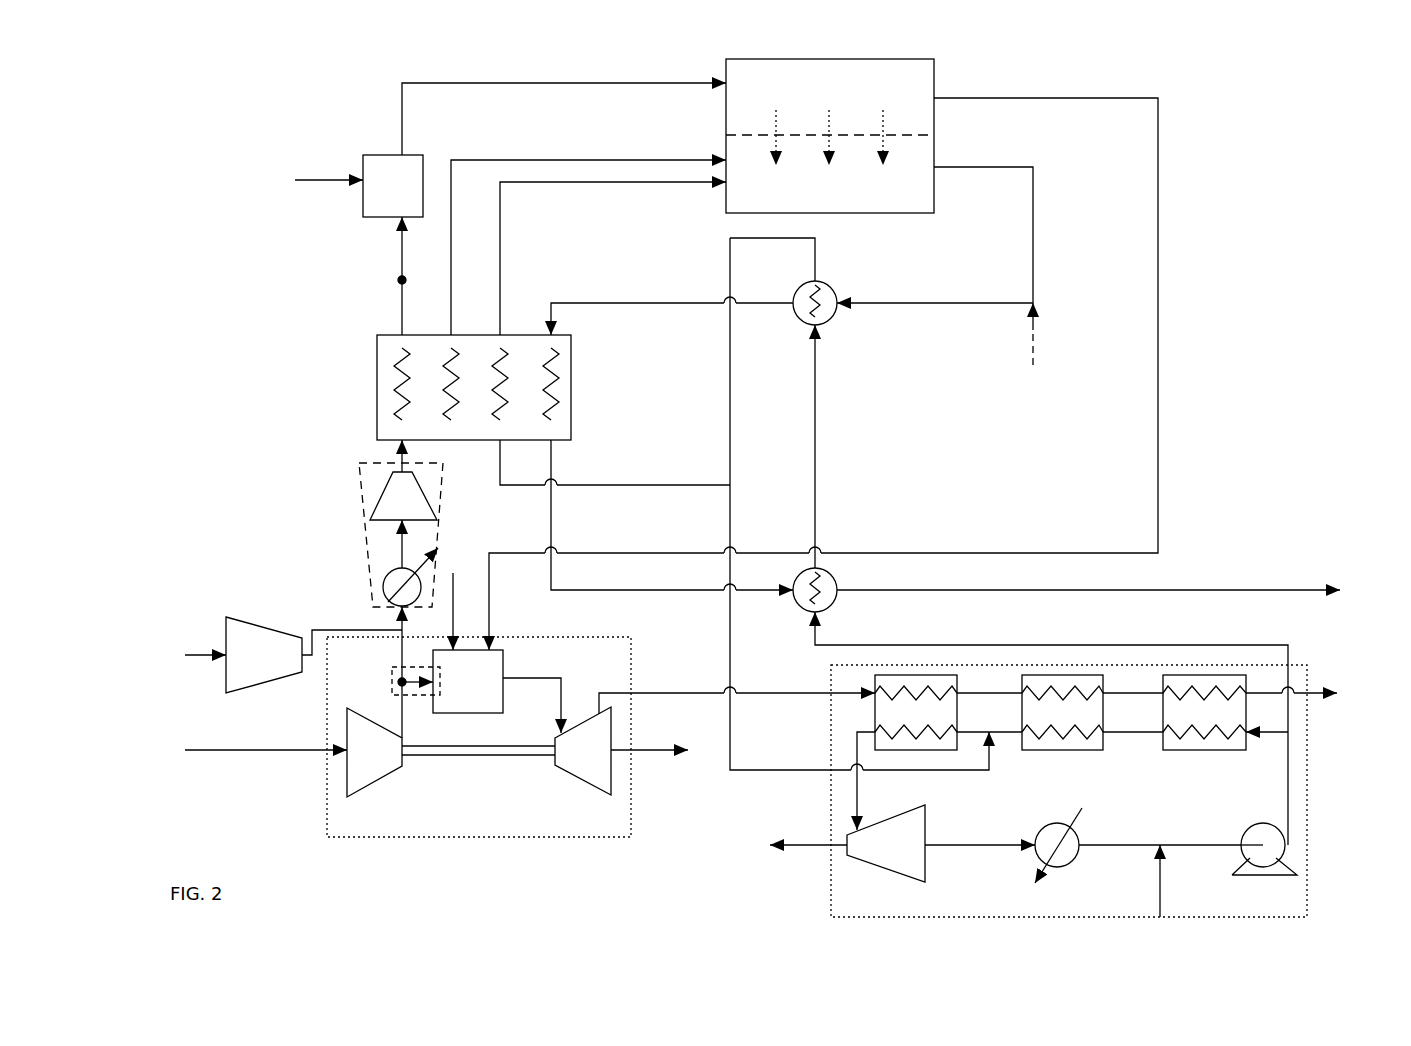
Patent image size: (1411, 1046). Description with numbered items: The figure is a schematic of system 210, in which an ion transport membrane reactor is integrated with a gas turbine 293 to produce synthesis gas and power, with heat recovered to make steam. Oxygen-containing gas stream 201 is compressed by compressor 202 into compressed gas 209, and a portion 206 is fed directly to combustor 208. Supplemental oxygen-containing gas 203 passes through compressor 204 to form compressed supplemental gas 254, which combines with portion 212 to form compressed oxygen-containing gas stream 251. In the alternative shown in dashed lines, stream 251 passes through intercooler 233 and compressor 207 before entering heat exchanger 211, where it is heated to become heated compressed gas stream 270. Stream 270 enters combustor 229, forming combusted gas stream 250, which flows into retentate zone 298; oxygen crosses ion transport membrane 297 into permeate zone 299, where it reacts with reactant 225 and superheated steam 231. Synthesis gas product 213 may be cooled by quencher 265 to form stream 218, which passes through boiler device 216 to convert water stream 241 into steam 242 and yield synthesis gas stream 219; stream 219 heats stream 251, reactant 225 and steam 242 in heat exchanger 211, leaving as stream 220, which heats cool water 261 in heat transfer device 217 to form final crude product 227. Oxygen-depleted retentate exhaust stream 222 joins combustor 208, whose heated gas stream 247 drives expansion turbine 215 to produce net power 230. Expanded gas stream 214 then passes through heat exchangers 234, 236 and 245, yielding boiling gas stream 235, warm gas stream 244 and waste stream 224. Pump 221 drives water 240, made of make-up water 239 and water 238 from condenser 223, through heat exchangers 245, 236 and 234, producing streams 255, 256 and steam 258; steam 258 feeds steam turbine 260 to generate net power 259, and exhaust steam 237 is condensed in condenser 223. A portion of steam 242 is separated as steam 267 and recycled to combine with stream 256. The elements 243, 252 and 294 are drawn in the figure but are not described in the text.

The oxygen-containing gas stream 201 is at (260, 750).
The compressor 202 is at (388, 762).
The supplemental oxygen-containing gas 203 is at (198, 655).
The compressor 204 is at (280, 665).
The portion of compressed air stream 206 is at (400, 696).
The compressor 207 is at (418, 508).
The combustor 208 is at (484, 690).
The compressed oxygen-containing gas 209 is at (408, 740).
The system 210 is at (1186, 104).
The heat exchanger 211 is at (377, 375).
The portion of compressed oxygen-containing gas stream 212 is at (402, 645).
The synthesis gas product 213 is at (963, 167).
The expanded oxygen-depleted gas stream 214 is at (655, 693).
The expansion turbine 215 is at (600, 760).
The boiler device 216 is at (832, 320).
The heat transfer device 217 is at (792, 570).
The synthesis gas stream 218 is at (921, 303).
The synthesis gas stream 219 is at (618, 303).
The synthesis gas stream 220 is at (600, 590).
The pump 221 is at (1265, 876).
The oxygen-depleted compressed retentate exhaust gas stream 222 is at (1158, 222).
The condenser 223 is at (1065, 868).
The waste stream 224 is at (1310, 693).
The reactant 225 is at (601, 160).
The final synthesis gas crude product 227 is at (1125, 590).
The combustor 229 is at (363, 212).
The net power 230 is at (645, 750).
The superheated steam 231 is at (606, 182).
The intercooler 233 is at (360, 530).
The heat exchanger 234 is at (932, 721).
The boiling gas stream 235 is at (962, 693).
The heat exchanger 236 is at (1078, 721).
The steam 237 is at (948, 845).
The water 238 is at (1098, 845).
The make-up water 239 is at (1162, 882).
The water 240 is at (1288, 758).
The water stream 241 is at (815, 445).
The steam 242 is at (730, 408).
The stream line 243 is at (462, 615).
The warm gas stream 244 is at (1108, 693).
The heat exchanger 245 is at (1220, 721).
The heated oxygen-depleted compressed gas stream 247 is at (543, 678).
The combusted compressed gas stream 250 is at (628, 83).
The compressed oxygen-containing gas stream 251 is at (395, 613).
The feed stream 252 is at (312, 178).
The compressed supplemental oxygen-containing gas 254 is at (322, 630).
The stream 255 is at (1108, 732).
The stream 256 is at (962, 732).
The steam 258 is at (857, 748).
The net power 259 is at (800, 845).
The steam turbine 260 is at (904, 854).
The water stream 261 is at (970, 645).
The quencher 265 is at (1036, 345).
The steam 267 is at (730, 634).
The heated compressed gas stream 270 is at (398, 281).
The gas turbine 293 is at (390, 838).
The heat recovery unit 294 is at (930, 917).
The ion transport membrane 297 is at (848, 133).
The retentate zone 298 is at (790, 89).
The permeate zone 299 is at (790, 204).